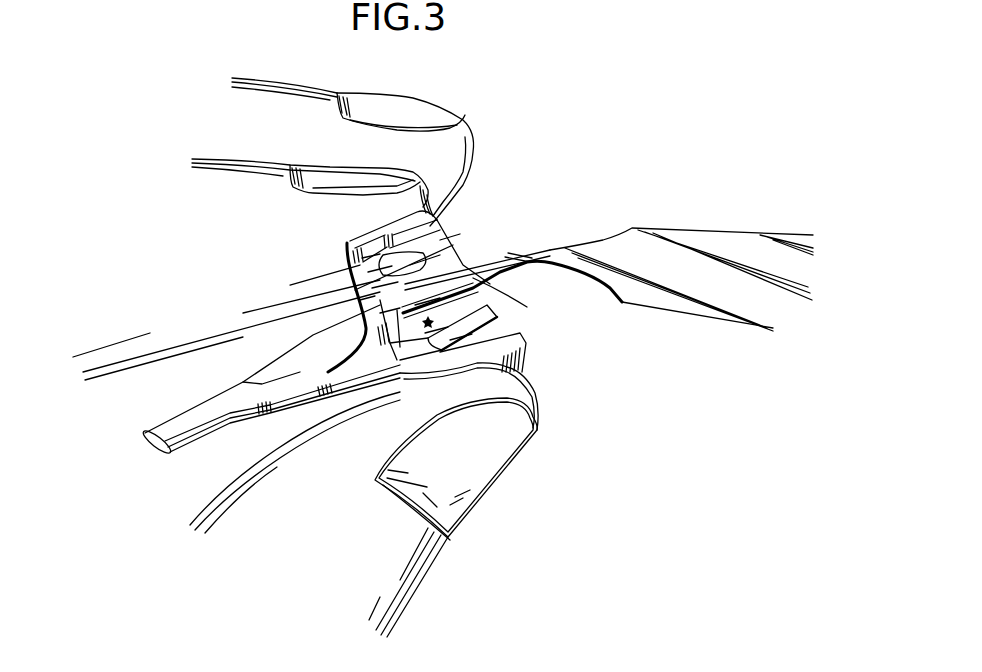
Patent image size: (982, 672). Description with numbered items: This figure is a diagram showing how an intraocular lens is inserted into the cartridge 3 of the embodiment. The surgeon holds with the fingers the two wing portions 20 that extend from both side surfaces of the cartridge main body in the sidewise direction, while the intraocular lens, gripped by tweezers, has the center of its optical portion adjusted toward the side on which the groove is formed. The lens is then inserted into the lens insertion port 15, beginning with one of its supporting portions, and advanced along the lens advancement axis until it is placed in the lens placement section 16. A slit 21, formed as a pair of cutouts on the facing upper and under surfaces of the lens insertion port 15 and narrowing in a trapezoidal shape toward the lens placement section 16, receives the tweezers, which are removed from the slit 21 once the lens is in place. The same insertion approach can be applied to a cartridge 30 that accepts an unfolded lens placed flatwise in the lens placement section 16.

The cartridge 3 is at (247, 364).
The lens insertion port 15 is at (473, 268).
The lens placement section 16 is at (460, 373).
The wing portions 20 is at (430, 215).
The slit 21 is at (467, 267).
The cartridge 30 is at (685, 232).